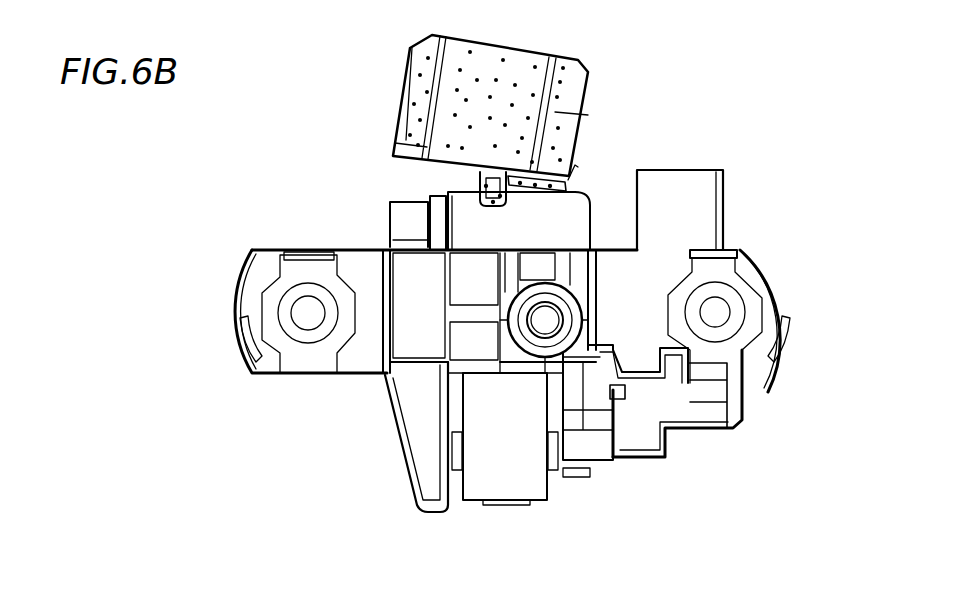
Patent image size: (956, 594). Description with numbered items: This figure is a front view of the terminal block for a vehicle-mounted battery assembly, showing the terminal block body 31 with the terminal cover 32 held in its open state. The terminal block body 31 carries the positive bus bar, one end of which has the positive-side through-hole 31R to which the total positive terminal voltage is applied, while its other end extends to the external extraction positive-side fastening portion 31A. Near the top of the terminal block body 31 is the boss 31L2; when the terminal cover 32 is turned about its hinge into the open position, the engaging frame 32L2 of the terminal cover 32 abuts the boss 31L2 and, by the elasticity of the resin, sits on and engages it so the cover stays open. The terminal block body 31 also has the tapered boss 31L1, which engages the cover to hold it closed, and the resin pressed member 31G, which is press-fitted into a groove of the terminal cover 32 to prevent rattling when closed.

The terminal block body 31 is at (707, 172).
The external extraction positive-side fastening portion 31A is at (637, 372).
The positive-side through-hole 31R is at (718, 314).
The pressed member 31G is at (690, 373).
The tapered boss 31L1 is at (628, 393).
The boss 31L2 is at (480, 185).
The terminal cover 32 is at (487, 62).
The engaging frame 32L2 is at (558, 190).